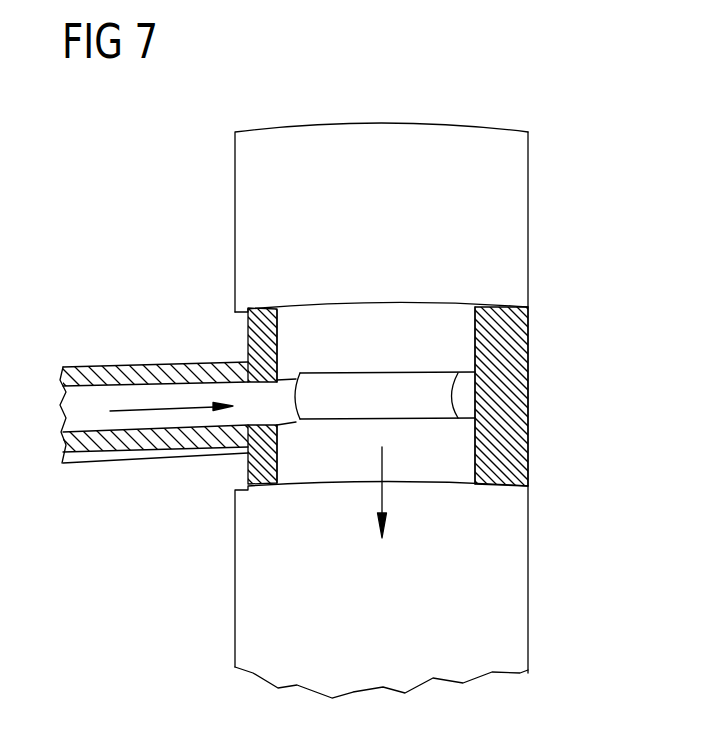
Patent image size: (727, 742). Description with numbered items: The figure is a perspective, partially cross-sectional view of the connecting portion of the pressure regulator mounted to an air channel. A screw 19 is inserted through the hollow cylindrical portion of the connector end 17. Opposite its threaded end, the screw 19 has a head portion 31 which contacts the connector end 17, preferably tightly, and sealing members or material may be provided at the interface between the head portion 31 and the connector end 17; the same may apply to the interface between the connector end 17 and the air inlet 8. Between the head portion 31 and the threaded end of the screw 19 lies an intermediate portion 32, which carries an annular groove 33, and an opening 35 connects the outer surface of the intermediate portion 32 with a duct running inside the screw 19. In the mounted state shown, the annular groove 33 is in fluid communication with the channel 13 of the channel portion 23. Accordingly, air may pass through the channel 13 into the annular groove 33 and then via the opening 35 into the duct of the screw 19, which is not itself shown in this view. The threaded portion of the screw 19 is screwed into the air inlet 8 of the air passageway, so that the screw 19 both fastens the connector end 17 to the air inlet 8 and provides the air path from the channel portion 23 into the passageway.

The air inlet 8 is at (515, 605).
The channel 13 is at (182, 395).
The connector end 17 is at (545, 442).
The screw 19 is at (541, 261).
The channel portion 23 is at (132, 378).
The head portion 31 is at (517, 186).
The intermediate portion 32 is at (377, 320).
The annular groove 33 is at (328, 388).
The opening 35 is at (450, 399).